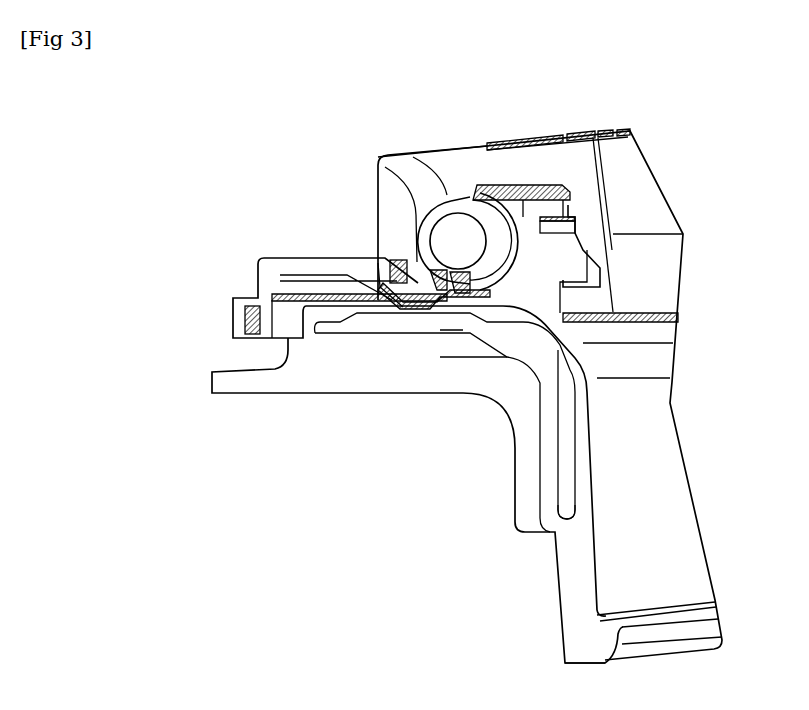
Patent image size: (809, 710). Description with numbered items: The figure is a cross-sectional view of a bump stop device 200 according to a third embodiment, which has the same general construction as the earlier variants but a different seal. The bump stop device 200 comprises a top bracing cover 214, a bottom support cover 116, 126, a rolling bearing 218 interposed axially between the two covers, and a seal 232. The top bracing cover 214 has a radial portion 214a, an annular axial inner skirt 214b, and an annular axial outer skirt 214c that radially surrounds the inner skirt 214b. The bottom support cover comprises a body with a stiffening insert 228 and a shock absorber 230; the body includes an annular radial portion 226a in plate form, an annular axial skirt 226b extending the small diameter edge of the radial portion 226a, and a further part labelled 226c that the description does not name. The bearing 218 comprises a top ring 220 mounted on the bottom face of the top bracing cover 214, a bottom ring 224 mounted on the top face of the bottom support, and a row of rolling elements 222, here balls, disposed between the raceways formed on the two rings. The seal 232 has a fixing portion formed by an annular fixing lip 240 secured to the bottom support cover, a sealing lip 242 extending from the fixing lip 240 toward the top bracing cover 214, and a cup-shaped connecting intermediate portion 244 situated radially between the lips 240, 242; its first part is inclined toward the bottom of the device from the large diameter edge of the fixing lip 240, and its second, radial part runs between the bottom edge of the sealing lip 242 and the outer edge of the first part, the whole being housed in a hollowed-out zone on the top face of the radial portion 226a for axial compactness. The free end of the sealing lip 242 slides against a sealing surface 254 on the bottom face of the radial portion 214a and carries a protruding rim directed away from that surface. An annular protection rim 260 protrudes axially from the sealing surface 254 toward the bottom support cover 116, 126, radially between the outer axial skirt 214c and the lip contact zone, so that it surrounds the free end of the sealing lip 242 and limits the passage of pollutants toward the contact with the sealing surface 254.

The bump stop device 200 is at (697, 207).
The top bracing cover 214 is at (648, 145).
The radial portion 214a is at (508, 147).
The annular axial inner skirt 214b is at (593, 210).
The annular axial outer skirt 214c is at (232, 320).
The rolling bearing 218 is at (450, 208).
The top ring 220 is at (377, 167).
The rolling elements 222 is at (452, 245).
The bottom ring 224 is at (480, 185).
The annular radial portion 226a is at (307, 342).
The annular axial skirt 226b is at (568, 556).
The bracket upper flange 226c is at (600, 287).
The stiffening insert 228 is at (565, 495).
The shock absorber 230 is at (247, 372).
The seal 232 is at (373, 253).
The annular fixing lip 240 is at (440, 272).
The sealing lip 242 is at (392, 290).
The connecting intermediate portion 244 is at (421, 292).
The sealing surface 254 is at (357, 257).
The annular protection rim 260 is at (297, 275).
The stator/rotor core 116, 126 is at (555, 606).